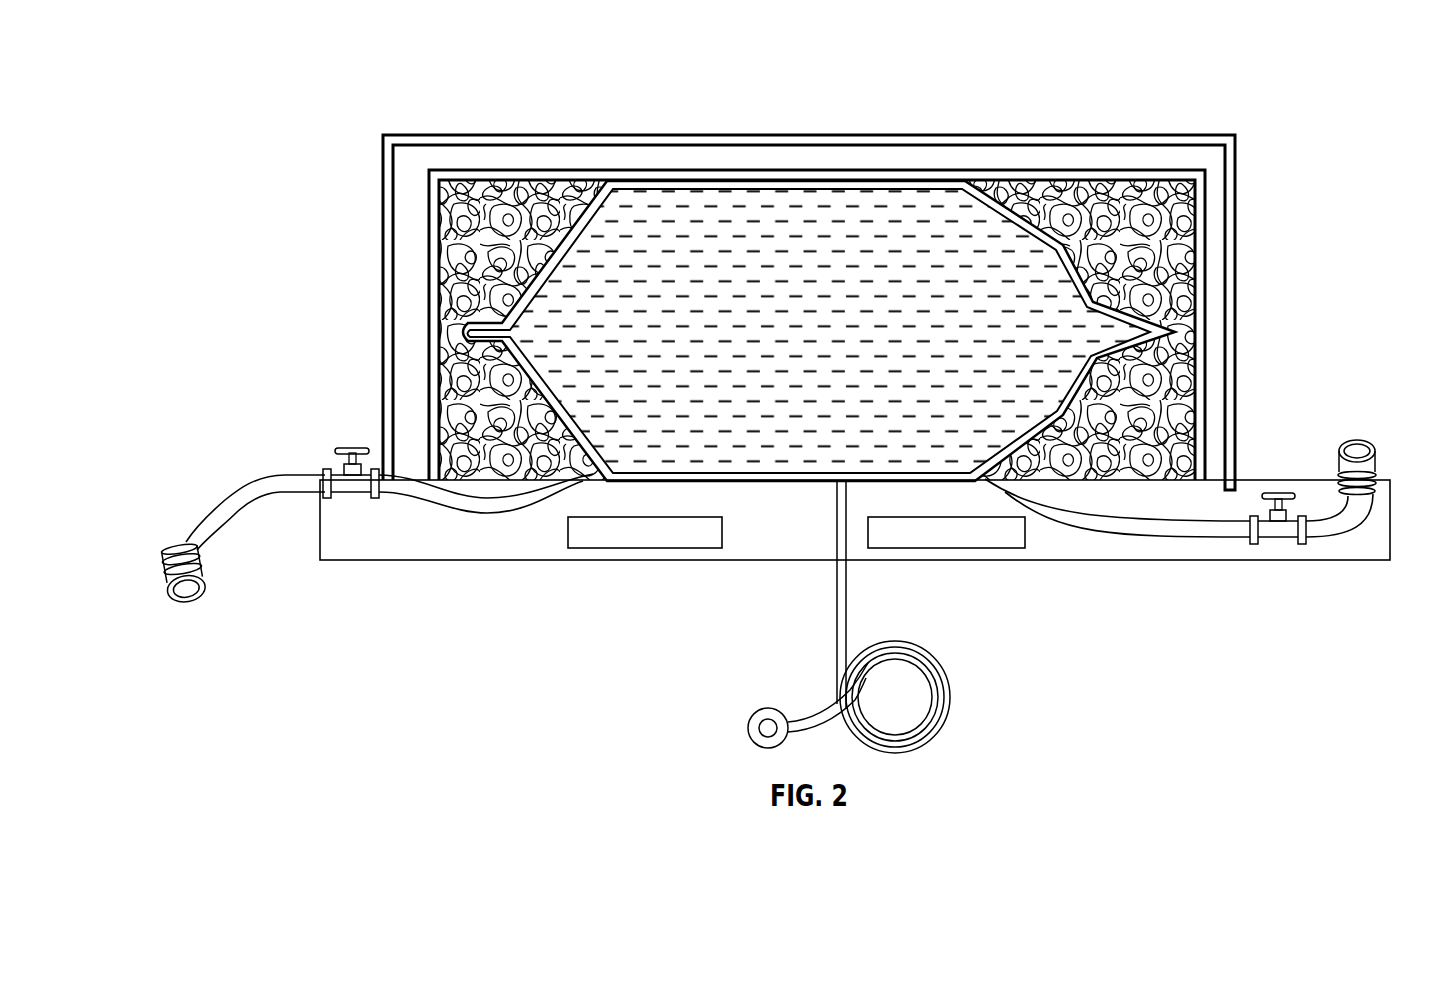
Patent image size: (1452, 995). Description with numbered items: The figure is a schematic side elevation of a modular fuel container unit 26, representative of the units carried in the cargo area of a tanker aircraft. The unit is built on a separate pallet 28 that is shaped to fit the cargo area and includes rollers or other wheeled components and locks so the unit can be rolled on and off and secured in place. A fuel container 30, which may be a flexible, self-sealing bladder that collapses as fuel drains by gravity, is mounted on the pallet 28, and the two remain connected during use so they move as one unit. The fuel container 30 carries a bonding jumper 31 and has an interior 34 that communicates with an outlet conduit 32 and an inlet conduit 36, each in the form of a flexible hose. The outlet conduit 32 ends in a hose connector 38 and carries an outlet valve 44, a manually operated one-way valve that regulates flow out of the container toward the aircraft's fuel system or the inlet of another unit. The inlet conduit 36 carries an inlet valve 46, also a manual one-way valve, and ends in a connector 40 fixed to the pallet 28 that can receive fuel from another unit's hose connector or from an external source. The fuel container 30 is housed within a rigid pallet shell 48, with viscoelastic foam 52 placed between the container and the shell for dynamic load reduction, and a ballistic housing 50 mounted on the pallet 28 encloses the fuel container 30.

The modular fuel container unit 26 is at (1237, 350).
The pallet 28 is at (1383, 533).
The fuel container 30 is at (990, 213).
The bonding jumper 31 is at (847, 612).
The outlet conduit 32 is at (250, 490).
The interior 34 is at (851, 238).
The inlet conduit 36 is at (1322, 527).
The hose connector 38 is at (167, 578).
The connector 40 is at (1376, 456).
The outlet valve 44 is at (346, 450).
The inlet valve 46 is at (1279, 493).
The pallet shell 48 is at (1200, 261).
The ballistic housing 50 is at (1228, 288).
The viscoelastic foam 52 is at (1188, 218).